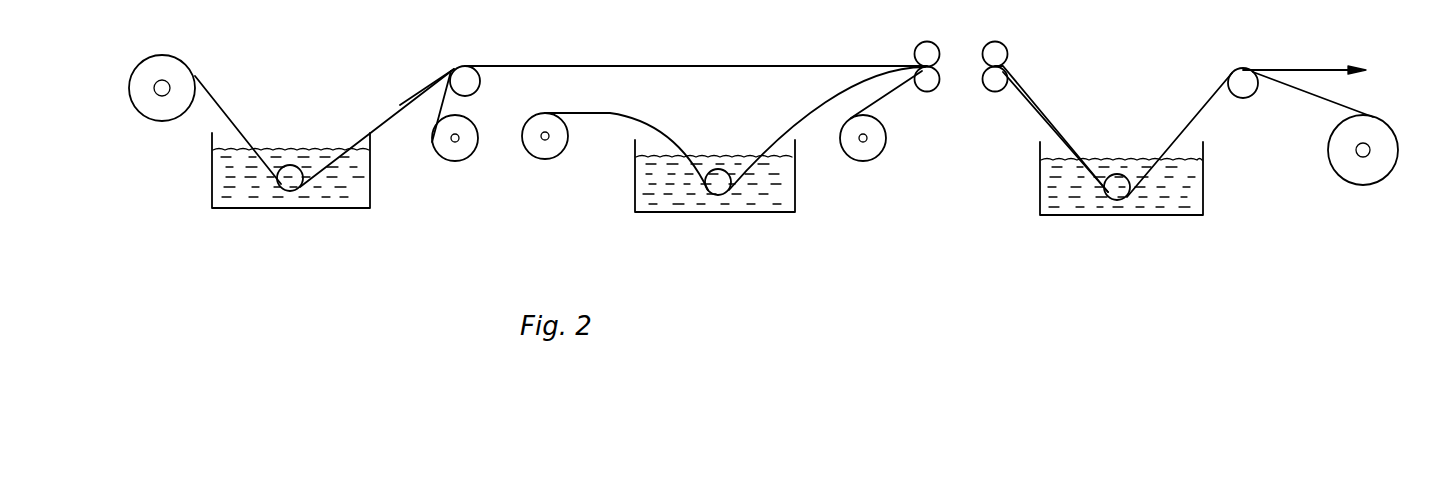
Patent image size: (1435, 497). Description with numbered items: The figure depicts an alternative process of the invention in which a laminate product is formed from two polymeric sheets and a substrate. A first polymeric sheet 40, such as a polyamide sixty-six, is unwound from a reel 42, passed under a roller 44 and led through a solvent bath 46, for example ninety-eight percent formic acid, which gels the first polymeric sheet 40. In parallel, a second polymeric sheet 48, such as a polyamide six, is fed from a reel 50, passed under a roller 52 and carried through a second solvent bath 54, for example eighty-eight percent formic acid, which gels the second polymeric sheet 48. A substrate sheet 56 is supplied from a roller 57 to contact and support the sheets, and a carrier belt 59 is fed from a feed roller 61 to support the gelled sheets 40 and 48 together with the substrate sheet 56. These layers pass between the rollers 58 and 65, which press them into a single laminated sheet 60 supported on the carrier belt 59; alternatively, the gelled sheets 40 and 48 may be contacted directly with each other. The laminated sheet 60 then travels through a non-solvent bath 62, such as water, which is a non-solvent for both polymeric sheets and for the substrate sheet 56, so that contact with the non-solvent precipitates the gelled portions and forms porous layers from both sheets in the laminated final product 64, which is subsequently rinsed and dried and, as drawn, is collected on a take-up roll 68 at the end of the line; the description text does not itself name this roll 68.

The first polymeric sheet 40 is at (222, 108).
The reel 42 is at (132, 85).
The roller 44 is at (283, 193).
The solvent bath 46 is at (343, 200).
The second polymeric sheet 48 is at (610, 110).
The reel 50 is at (557, 145).
The roller 52 is at (715, 193).
The solvent bath 54 is at (773, 200).
The substrate sheet 56 is at (443, 95).
The roller 57 is at (455, 152).
The roller 58 is at (988, 86).
The carrier belt 59 is at (410, 103).
The laminated sheet 60 is at (1040, 112).
The feed roller 61 is at (858, 155).
The non-solvent bath 62 is at (1170, 208).
The laminated final product 64 is at (1297, 68).
The roller 65 is at (990, 50).
The take-up roll 68 is at (1338, 158).